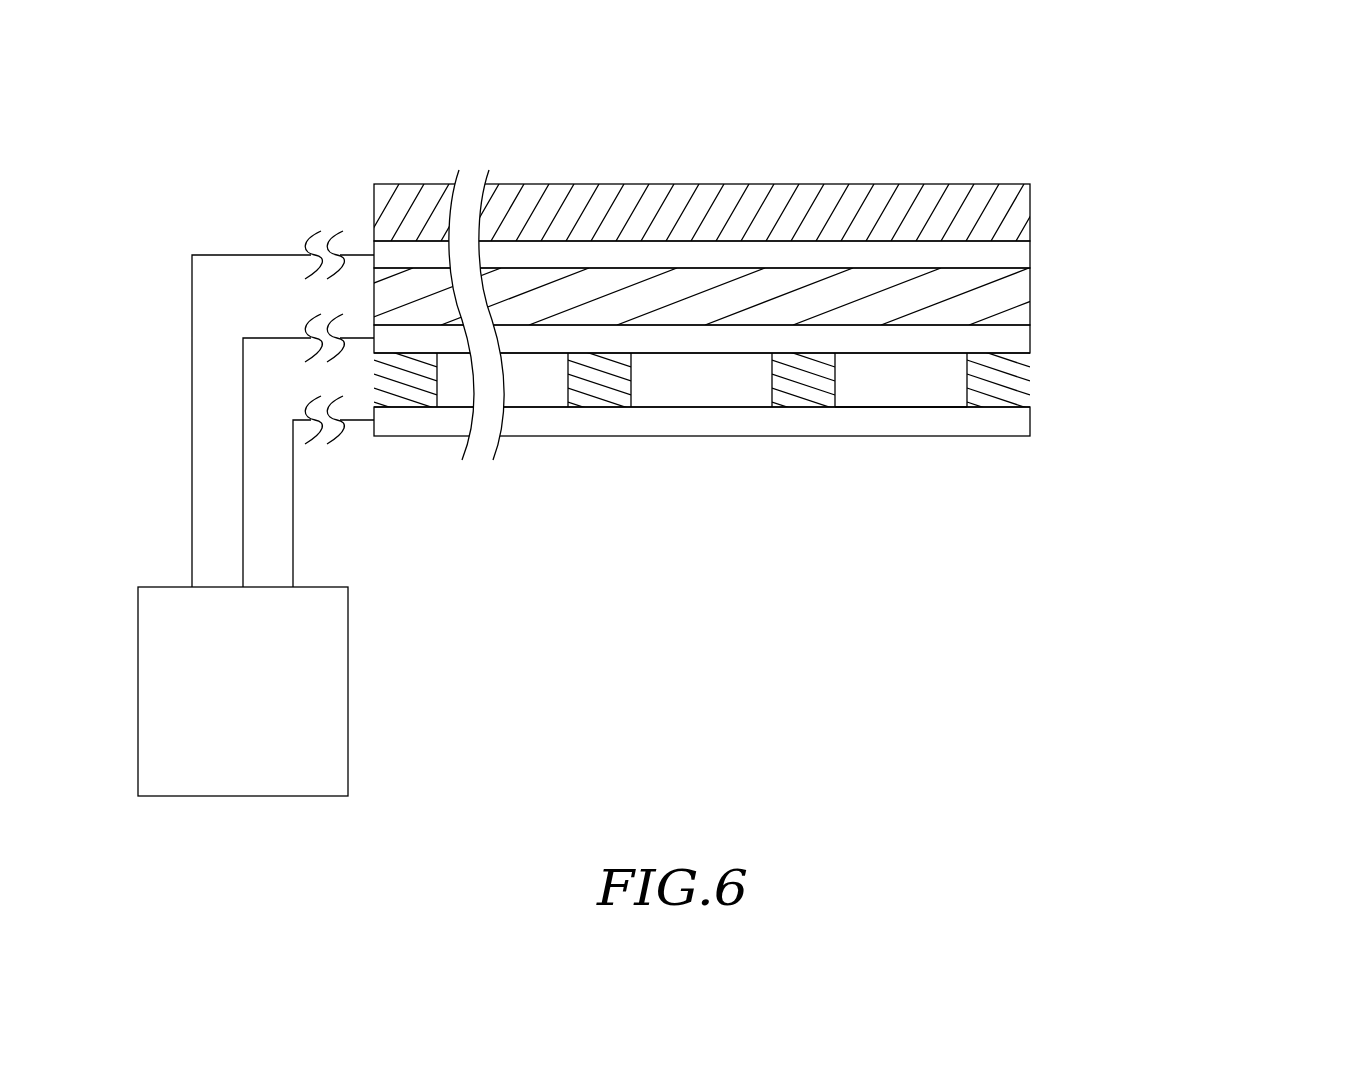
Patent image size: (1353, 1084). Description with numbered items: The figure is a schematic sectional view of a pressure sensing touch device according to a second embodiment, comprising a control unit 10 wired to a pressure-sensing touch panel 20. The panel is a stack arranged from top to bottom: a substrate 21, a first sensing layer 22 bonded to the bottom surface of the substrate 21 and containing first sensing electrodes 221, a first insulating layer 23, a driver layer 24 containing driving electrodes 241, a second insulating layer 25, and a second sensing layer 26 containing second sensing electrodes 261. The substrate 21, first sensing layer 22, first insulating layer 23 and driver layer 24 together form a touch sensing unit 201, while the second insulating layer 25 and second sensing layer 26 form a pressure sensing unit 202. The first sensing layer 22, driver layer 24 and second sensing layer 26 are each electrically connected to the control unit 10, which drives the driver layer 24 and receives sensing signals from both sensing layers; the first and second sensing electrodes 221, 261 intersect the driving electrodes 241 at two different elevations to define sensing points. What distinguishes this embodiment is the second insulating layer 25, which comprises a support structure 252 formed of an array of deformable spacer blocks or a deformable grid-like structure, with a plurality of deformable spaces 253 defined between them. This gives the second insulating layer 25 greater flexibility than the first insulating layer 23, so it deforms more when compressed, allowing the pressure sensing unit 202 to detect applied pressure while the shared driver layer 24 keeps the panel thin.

The control unit 10 is at (163, 585).
The pressure-sensing touch panel 20 is at (748, 295).
The touch sensing unit 201 is at (748, 267).
The pressure sensing unit 202 is at (847, 414).
The substrate 21 is at (1018, 217).
The first sensing layer 22 is at (805, 245).
The first sensing electrodes 221 is at (1012, 262).
The first insulating layer 23 is at (1013, 307).
The driver layer 24 is at (805, 331).
The driving electrode 241 is at (1013, 340).
The second insulating layer 25 is at (805, 415).
The support structure 252 is at (1020, 385).
The deformable space 253 is at (905, 375).
The second sensing layer 26 is at (805, 416).
The second sensing electrodes 261 is at (1018, 425).